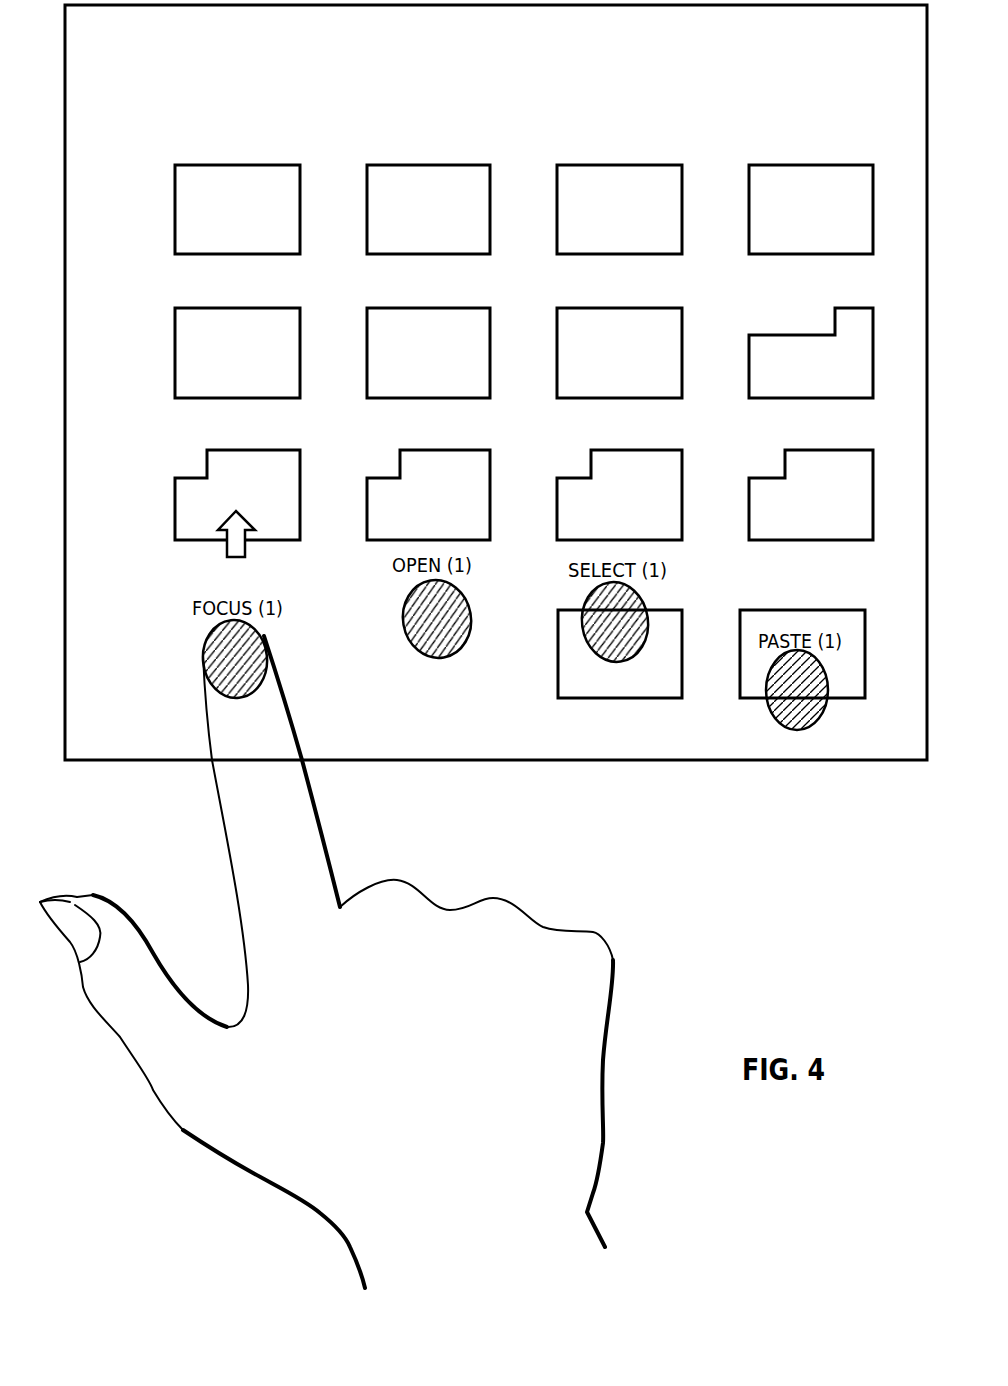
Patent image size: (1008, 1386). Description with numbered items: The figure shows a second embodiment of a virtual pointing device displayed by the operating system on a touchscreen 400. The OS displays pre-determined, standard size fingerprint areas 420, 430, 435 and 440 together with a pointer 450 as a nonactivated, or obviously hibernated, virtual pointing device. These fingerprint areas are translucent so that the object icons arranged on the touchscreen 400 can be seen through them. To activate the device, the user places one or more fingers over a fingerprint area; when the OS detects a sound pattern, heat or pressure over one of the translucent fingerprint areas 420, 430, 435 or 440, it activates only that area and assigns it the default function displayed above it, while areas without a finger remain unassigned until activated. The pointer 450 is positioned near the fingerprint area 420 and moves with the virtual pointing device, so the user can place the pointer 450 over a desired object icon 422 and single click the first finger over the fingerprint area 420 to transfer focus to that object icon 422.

The touchscreen 400 is at (862, 64).
The fingerprint area 420 is at (250, 650).
The object icon 422 is at (218, 521).
The fingerprint area 430 is at (450, 660).
The fingerprint area 435 is at (632, 603).
The fingerprint area 440 is at (812, 712).
The pointer 450 is at (246, 520).